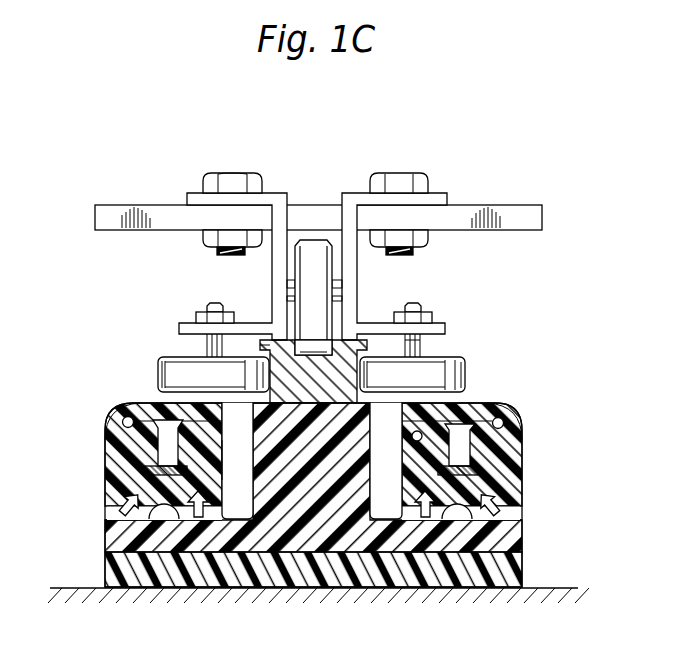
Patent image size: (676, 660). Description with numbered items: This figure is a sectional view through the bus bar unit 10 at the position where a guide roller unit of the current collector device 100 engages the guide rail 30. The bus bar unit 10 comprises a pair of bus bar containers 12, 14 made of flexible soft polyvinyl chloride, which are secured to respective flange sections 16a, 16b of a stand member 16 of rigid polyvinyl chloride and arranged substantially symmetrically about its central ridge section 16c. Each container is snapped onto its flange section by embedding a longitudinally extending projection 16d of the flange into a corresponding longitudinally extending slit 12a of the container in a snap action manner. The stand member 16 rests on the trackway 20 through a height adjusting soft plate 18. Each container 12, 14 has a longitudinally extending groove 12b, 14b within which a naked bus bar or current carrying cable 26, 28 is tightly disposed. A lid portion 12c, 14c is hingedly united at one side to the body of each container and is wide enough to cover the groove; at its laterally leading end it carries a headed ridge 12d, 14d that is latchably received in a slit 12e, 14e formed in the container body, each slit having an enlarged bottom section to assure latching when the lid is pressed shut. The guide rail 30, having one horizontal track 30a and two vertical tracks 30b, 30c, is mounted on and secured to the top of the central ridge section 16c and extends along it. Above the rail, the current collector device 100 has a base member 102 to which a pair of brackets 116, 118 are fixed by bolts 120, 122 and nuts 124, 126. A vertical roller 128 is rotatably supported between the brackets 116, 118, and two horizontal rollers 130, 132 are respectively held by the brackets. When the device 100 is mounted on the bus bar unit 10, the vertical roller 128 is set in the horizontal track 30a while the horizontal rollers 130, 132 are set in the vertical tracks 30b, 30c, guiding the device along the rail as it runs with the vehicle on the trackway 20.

The bus bar unit 10 is at (526, 440).
The bus bar container 12 is at (118, 467).
The slit 12a is at (122, 507).
The groove 12b is at (108, 425).
The lid portion 12c is at (158, 424).
The headed ridge 12d is at (237, 461).
The slit 12e is at (238, 460).
The bus bar container 14 is at (510, 472).
The groove 14b is at (458, 448).
The lid portion 14c is at (500, 418).
The headed ridge 14d is at (473, 413).
The slit 14e is at (446, 490).
The stand member 16 is at (348, 530).
The flange section 16a is at (110, 536).
The flange section 16b is at (490, 532).
The central ridge section 16c is at (386, 461).
The projection 16d is at (109, 491).
The height adjusting soft plate 18 is at (507, 577).
The trackway 20 is at (472, 631).
The bus bar 26 is at (107, 442).
The bus bar 28 is at (490, 485).
The guide rail 30 is at (357, 347).
The horizontal track 30a is at (312, 355).
The vertical track 30b is at (263, 346).
The vertical track 30c is at (420, 333).
The current collector device 100 is at (324, 239).
The base member 102 is at (544, 218).
The bracket 116 is at (279, 198).
The bracket 118 is at (346, 197).
The bolt 120 is at (233, 171).
The bolt 122 is at (408, 171).
The nut 124 is at (203, 239).
The nut 126 is at (426, 239).
The vertical roller 128 is at (312, 248).
The horizontal roller 130 is at (175, 368).
The horizontal roller 132 is at (457, 364).